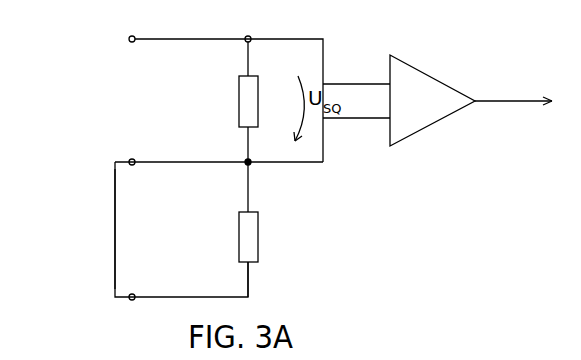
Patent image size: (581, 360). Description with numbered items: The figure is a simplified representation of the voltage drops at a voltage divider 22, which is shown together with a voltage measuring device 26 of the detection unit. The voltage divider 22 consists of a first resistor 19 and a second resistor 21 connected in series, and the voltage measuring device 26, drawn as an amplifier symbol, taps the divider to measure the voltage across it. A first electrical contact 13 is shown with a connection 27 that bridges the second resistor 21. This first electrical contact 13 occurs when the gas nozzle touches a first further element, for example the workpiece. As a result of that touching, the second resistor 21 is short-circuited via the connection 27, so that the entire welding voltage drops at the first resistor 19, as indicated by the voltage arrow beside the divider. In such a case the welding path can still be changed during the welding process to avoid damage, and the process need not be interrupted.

The first electrical contact 13 is at (92, 198).
The first resistor 19 is at (238, 83).
The second resistor 21 is at (258, 240).
The voltage divider 22 is at (242, 159).
The voltage measuring device 26 is at (403, 75).
The connection 27 is at (115, 232).